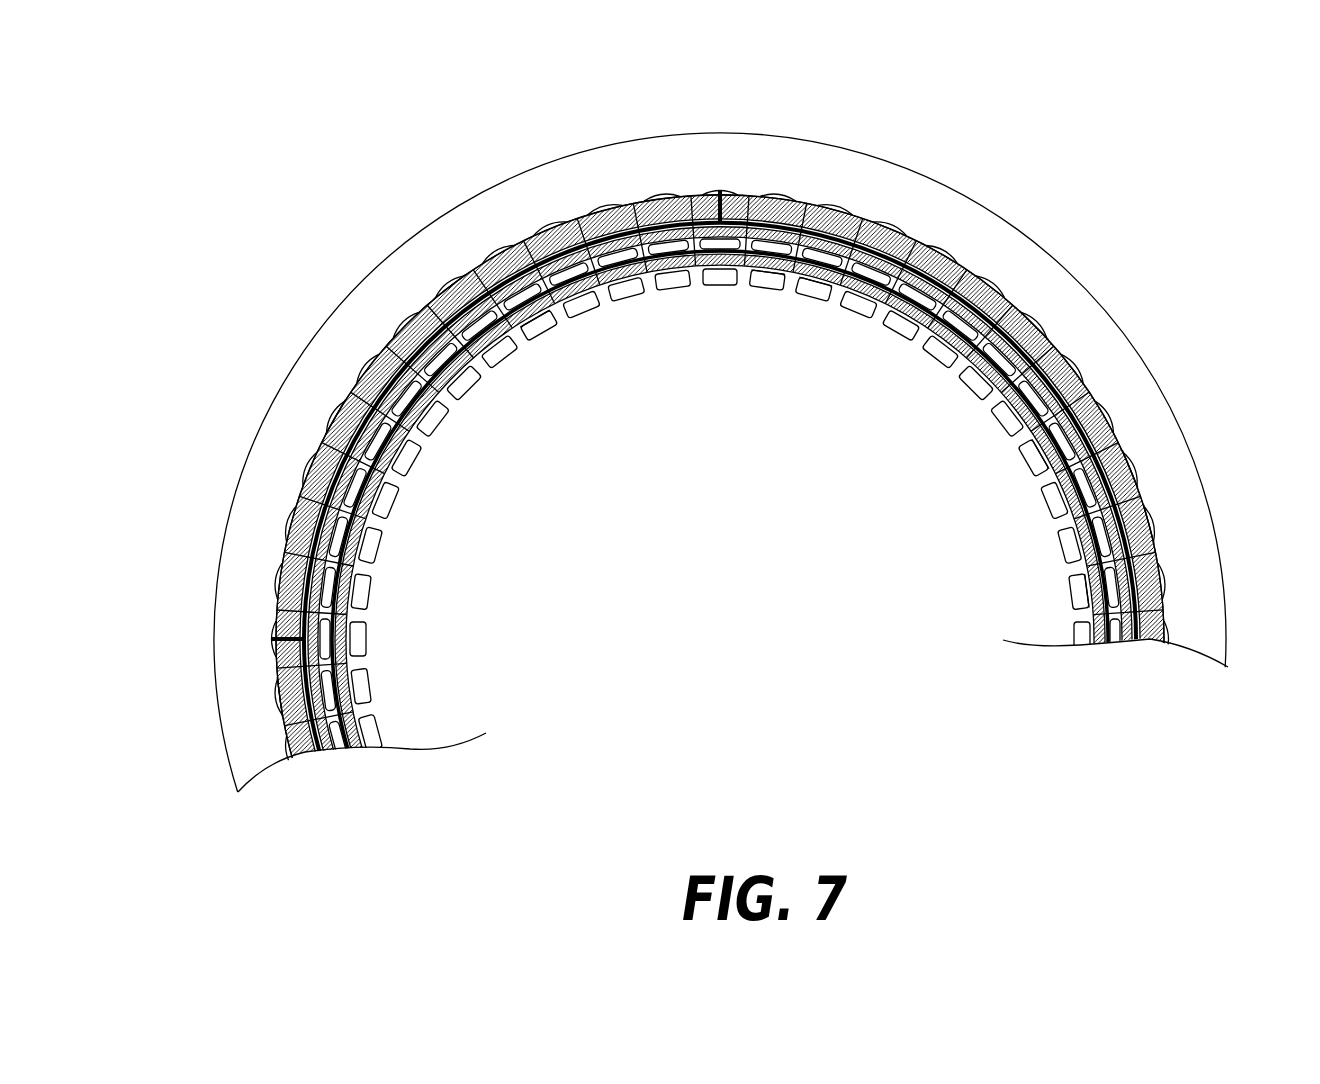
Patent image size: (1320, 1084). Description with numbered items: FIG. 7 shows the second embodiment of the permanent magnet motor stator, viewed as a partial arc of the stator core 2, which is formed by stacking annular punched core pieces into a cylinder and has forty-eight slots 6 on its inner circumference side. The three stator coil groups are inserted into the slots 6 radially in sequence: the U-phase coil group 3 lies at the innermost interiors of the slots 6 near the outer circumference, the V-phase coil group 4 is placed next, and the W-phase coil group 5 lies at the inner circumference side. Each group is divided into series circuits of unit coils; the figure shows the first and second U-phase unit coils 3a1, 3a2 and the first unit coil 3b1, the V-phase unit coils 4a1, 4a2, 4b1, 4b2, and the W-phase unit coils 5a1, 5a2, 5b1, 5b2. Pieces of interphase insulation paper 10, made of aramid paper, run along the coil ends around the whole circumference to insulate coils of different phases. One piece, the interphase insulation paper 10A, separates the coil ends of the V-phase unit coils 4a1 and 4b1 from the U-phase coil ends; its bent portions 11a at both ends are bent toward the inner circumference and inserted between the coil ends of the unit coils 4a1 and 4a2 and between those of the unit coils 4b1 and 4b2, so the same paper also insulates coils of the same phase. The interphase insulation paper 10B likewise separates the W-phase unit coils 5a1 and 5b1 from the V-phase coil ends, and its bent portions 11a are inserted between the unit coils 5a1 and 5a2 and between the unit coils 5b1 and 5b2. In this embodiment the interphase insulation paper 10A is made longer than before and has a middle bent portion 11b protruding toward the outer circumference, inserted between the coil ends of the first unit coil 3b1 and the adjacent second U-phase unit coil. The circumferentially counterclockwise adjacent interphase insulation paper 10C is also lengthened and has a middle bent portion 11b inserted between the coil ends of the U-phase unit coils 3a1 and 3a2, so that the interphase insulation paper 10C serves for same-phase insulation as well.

The stator core 2 is at (935, 198).
The U-phase coil group 3 is at (700, 438).
The first unit coil of first series circuit of U-phase coil group 3a1 is at (340, 420).
The second unit coil of first series circuit of U-phase coil group 3a2 is at (285, 690).
The first unit coil of second series circuit of U-phase coil group 3b1 is at (445, 290).
The V-phase coil group 4 is at (1130, 462).
The first unit coil of first series circuit of V-phase coil group 4a1 is at (588, 212).
The second unit coil of first series circuit of V-phase coil group 4a2 is at (385, 462).
The first unit coil of second series circuit of V-phase coil group 4b1 is at (640, 205).
The second unit coil of second series circuit of V-phase coil group 4b2 is at (930, 322).
The W-phase coil group 5 is at (1075, 568).
The first unit coil of first series circuit of W-phase coil group 5a1 is at (793, 285).
The second unit coil of first series circuit of W-phase coil group 5a2 is at (512, 327).
The first unit coil of second series circuit of W-phase coil group 5b1 is at (838, 292).
The second unit coil of second series circuit of W-phase coil group 5b2 is at (1063, 472).
The slot 6 is at (1025, 320).
The interphase insulation paper 10 is at (1150, 508).
The interphase insulation paper 10A is at (797, 205).
The interphase insulation paper 10B is at (700, 278).
The interphase insulation paper 10C is at (280, 583).
The bent portion 11a is at (545, 305).
The bent portion 11b is at (722, 195).